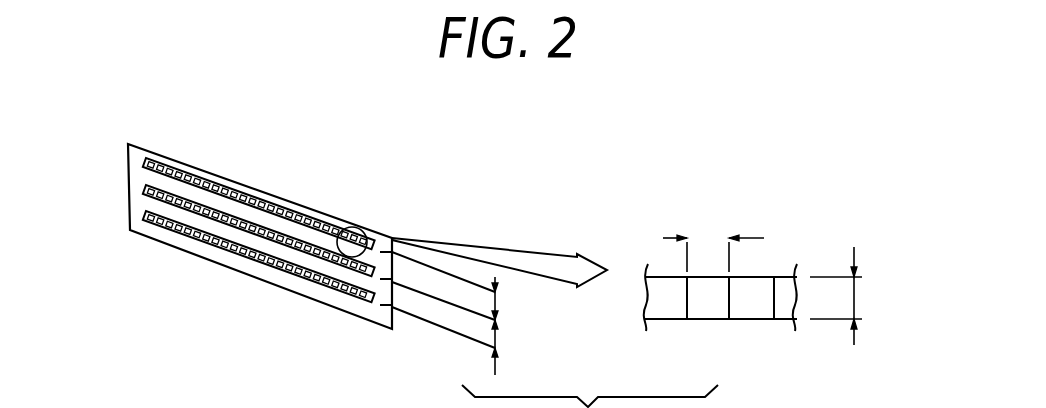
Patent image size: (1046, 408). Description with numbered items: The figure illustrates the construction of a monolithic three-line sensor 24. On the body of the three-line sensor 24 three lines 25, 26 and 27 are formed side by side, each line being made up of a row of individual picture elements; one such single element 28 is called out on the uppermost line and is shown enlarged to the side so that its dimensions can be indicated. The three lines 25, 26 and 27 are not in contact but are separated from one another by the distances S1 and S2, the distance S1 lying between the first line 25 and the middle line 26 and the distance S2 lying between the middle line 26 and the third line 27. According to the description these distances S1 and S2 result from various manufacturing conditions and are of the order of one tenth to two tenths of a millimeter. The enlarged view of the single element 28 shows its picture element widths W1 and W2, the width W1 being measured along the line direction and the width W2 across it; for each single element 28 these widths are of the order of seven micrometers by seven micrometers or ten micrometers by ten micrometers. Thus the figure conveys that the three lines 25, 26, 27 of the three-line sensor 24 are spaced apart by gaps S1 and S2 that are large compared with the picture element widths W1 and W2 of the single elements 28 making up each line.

The three-line sensor 24 is at (127, 178).
The line 25 is at (184, 173).
The line 26 is at (240, 205).
The line 27 is at (196, 240).
The single element 28 is at (356, 233).
The distance between lines S1 is at (498, 308).
The distance between lines S2 is at (498, 342).
The picture element width W1 is at (713, 237).
The picture element width W2 is at (856, 296).